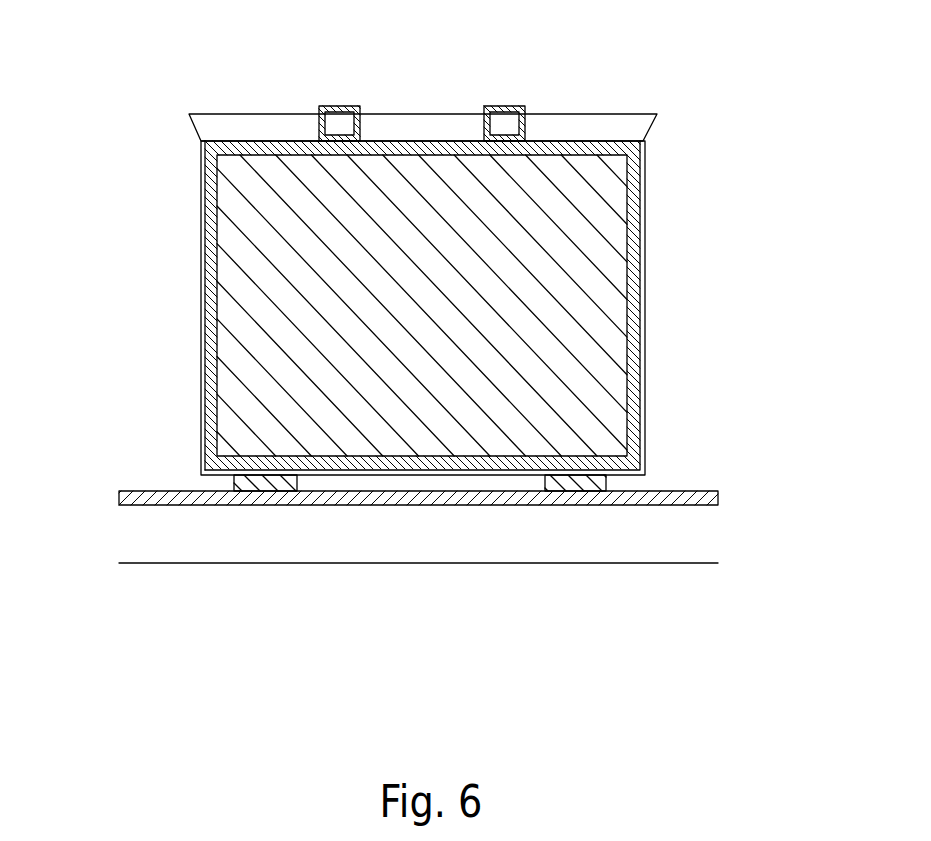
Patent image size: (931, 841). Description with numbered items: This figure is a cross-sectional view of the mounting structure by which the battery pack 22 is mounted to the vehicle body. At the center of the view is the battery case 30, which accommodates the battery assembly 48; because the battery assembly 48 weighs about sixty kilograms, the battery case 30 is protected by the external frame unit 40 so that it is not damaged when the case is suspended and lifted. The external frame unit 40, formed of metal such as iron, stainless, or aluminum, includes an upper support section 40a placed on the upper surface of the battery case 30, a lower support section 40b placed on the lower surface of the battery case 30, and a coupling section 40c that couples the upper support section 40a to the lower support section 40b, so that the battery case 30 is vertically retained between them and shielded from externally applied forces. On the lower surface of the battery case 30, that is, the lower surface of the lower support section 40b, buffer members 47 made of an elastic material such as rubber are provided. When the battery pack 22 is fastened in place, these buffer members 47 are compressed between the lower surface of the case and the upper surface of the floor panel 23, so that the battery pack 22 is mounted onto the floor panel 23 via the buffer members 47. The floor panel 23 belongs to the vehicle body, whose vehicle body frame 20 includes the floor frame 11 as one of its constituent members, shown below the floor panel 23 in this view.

The floor frame 11 is at (662, 542).
The vehicle body frame 20 is at (425, 545).
The battery pack 22 is at (437, 332).
The floor panel 23 is at (690, 490).
The battery case 30 is at (205, 244).
The external frame unit 40 is at (408, 332).
The upper support section 40a is at (583, 113).
The lower support section 40b is at (380, 478).
The coupling section 40c is at (200, 387).
The buffer members 47 is at (258, 492).
The battery assembly 48 is at (597, 203).